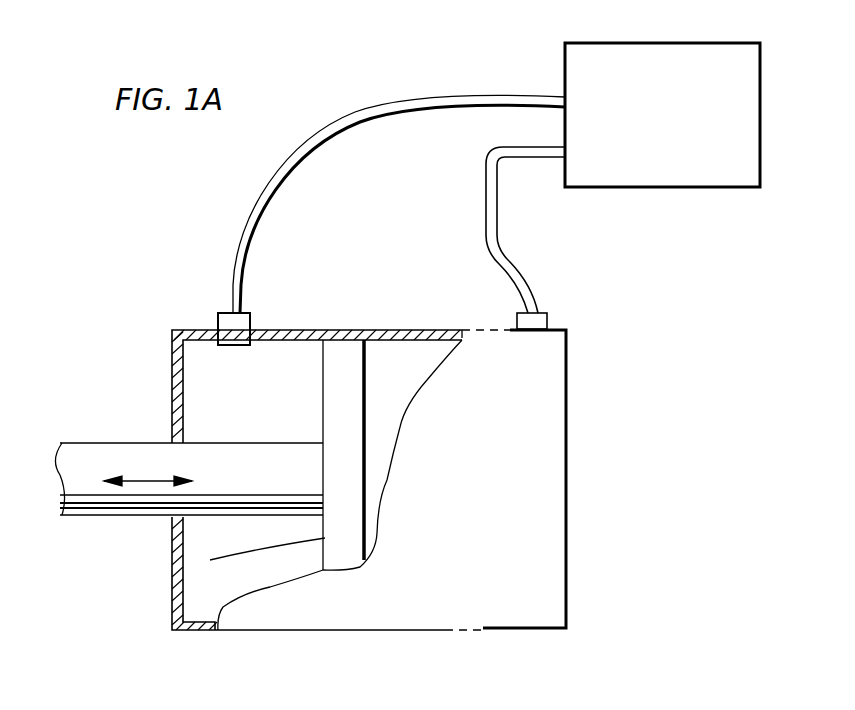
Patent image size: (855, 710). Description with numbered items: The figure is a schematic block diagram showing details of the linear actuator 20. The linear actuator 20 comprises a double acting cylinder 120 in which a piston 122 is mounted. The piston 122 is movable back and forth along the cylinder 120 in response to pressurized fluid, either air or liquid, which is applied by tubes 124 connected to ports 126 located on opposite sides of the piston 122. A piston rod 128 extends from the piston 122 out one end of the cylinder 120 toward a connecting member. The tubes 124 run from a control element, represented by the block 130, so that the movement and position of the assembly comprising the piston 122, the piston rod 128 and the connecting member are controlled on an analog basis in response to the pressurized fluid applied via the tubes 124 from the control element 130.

The linear actuator 20 is at (362, 672).
The double acting cylinder 120 is at (568, 580).
The piston 122 is at (210, 560).
The tubes 124 is at (490, 157).
The ports 126 is at (232, 313).
The piston rod 128 is at (95, 452).
The control element 130 is at (668, 43).